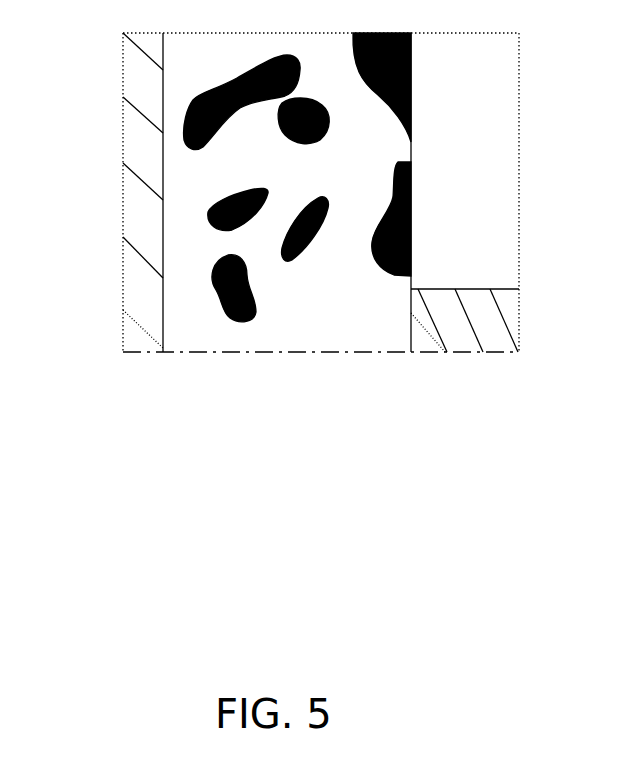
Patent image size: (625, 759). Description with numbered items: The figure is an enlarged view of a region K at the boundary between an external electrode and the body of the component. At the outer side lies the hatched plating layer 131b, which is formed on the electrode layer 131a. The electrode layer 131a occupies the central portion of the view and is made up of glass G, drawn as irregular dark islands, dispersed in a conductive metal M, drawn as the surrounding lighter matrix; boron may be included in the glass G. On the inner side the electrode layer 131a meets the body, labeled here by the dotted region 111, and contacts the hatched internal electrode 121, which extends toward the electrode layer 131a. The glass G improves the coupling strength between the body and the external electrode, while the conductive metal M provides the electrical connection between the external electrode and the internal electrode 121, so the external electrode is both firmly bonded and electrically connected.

The plating layer 131b is at (128, 285).
The electrode layer 131a is at (297, 246).
The substrate 111 is at (505, 249).
The internal electrode 121 is at (505, 323).
The glass G is at (340, 409).
The conductive metal M is at (312, 283).
The region K is at (316, 531).